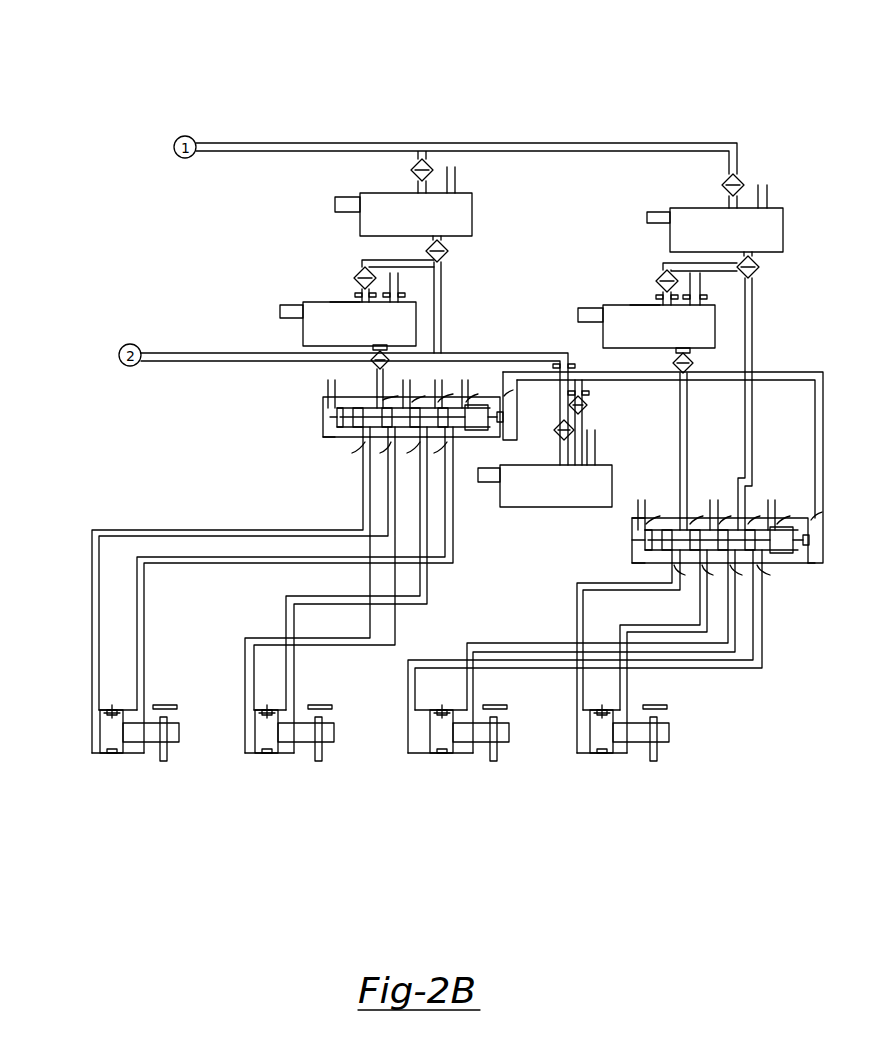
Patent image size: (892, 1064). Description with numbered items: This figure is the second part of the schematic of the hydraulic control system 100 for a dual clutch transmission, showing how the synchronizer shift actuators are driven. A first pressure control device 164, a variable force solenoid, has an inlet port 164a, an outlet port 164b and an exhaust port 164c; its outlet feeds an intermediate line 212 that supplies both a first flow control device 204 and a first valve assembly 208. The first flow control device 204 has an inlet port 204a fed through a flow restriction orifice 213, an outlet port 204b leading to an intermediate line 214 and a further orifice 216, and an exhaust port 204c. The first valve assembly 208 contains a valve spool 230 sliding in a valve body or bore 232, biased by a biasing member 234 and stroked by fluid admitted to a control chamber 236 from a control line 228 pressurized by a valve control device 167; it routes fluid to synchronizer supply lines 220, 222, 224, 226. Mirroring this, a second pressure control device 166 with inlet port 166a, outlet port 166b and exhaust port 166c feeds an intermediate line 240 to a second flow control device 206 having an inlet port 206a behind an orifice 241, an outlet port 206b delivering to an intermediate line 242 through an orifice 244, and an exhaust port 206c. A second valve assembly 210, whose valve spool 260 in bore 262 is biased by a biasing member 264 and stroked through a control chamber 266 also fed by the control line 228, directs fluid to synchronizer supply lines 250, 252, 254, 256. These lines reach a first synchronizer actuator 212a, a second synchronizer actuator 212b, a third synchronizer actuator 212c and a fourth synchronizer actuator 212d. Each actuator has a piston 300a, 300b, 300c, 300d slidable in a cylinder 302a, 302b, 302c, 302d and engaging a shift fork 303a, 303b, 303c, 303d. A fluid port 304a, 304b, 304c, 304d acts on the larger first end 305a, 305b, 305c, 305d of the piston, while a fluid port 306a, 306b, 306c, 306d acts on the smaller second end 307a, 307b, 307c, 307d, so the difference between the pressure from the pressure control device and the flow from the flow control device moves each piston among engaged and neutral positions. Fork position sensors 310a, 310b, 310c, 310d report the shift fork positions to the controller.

The hydraulic control system 100 is at (698, 52).
The first pressure control device 164 is at (360, 221).
The inlet port 164a is at (418, 183).
The outlet port 164b is at (446, 249).
The exhaust port 164c is at (456, 192).
The second pressure control device 166 is at (670, 230).
The inlet port 166a is at (727, 207).
The outlet port 166b is at (759, 264).
The exhaust port 166c is at (768, 207).
The valve control device 167 is at (514, 508).
The first flow control device 204 is at (303, 322).
The inlet port 204a is at (355, 301).
The outlet port 204b is at (374, 347).
The exhaust port 204c is at (400, 296).
The second flow control device 206 is at (603, 322).
The inlet port 206a is at (660, 304).
The outlet port 206b is at (692, 355).
The exhaust port 206c is at (702, 299).
The first valve assembly 208 is at (394, 432).
The second valve assembly 210 is at (826, 582).
The intermediate line 212 is at (442, 332).
The flow restriction orifice 213 is at (362, 290).
The intermediate line 214 is at (375, 381).
The flow restriction orifice 216 is at (442, 348).
The synchronizer supply line 220 is at (365, 571).
The synchronizer supply line 222 is at (210, 530).
The synchronizer supply line 224 is at (436, 606).
The synchronizer supply line 226 is at (208, 566).
The control line 228 is at (614, 381).
The valve spool 230 is at (330, 438).
The valve body or bore 232 is at (482, 440).
The biasing member 234 is at (325, 416).
The control chamber 236 is at (518, 422).
The intermediate line 240 is at (753, 334).
The flow restriction orifice 241 is at (664, 292).
The intermediate line 242 is at (689, 410).
The flow restriction orifice 244 is at (677, 351).
The synchronizer supply line 250 is at (575, 592).
The synchronizer supply line 252 is at (716, 660).
The synchronizer supply line 254 is at (742, 647).
The synchronizer supply line 256 is at (557, 642).
The valve spool 260 is at (633, 559).
The valve body or bore 262 is at (640, 543).
The biasing member 264 is at (634, 532).
The control chamber 266 is at (824, 543).
The piston 300a is at (113, 710).
The piston 300b is at (268, 710).
The piston 300c is at (437, 710).
The piston 300d is at (600, 710).
The piston housing or cylinder 302a is at (94, 757).
The piston housing or cylinder 302b is at (249, 757).
The piston housing or cylinder 302c is at (412, 757).
The piston housing or cylinder 302d is at (581, 757).
The shift rail component 303a is at (164, 763).
The shift rail component 303b is at (322, 760).
The shift rail component 303c is at (497, 760).
The shift rail component 303d is at (657, 760).
The fluid port 304a is at (96, 704).
The fluid port 304b is at (249, 704).
The fluid port 304c is at (412, 704).
The fluid port 304d is at (580, 706).
The first end 305a is at (86, 740).
The first end 305b is at (241, 740).
The first end 305c is at (416, 740).
The first end 305d is at (575, 740).
The fluid port 306a is at (146, 702).
The fluid port 306b is at (296, 702).
The fluid port 306c is at (475, 698).
The fluid port 306d is at (629, 698).
The second end 307a is at (130, 760).
The second end 307b is at (285, 760).
The second end 307c is at (460, 760).
The second end 307d is at (620, 760).
The fork position sensor 310a is at (178, 708).
The fork position sensor 310b is at (333, 708).
The fork position sensor 310c is at (508, 708).
The fork position sensor 310d is at (668, 708).
The first synchronizer actuator 212a is at (84, 766).
The second synchronizer actuator 212b is at (240, 766).
The third synchronizer actuator 212c is at (403, 766).
The fourth synchronizer actuator 212d is at (570, 766).